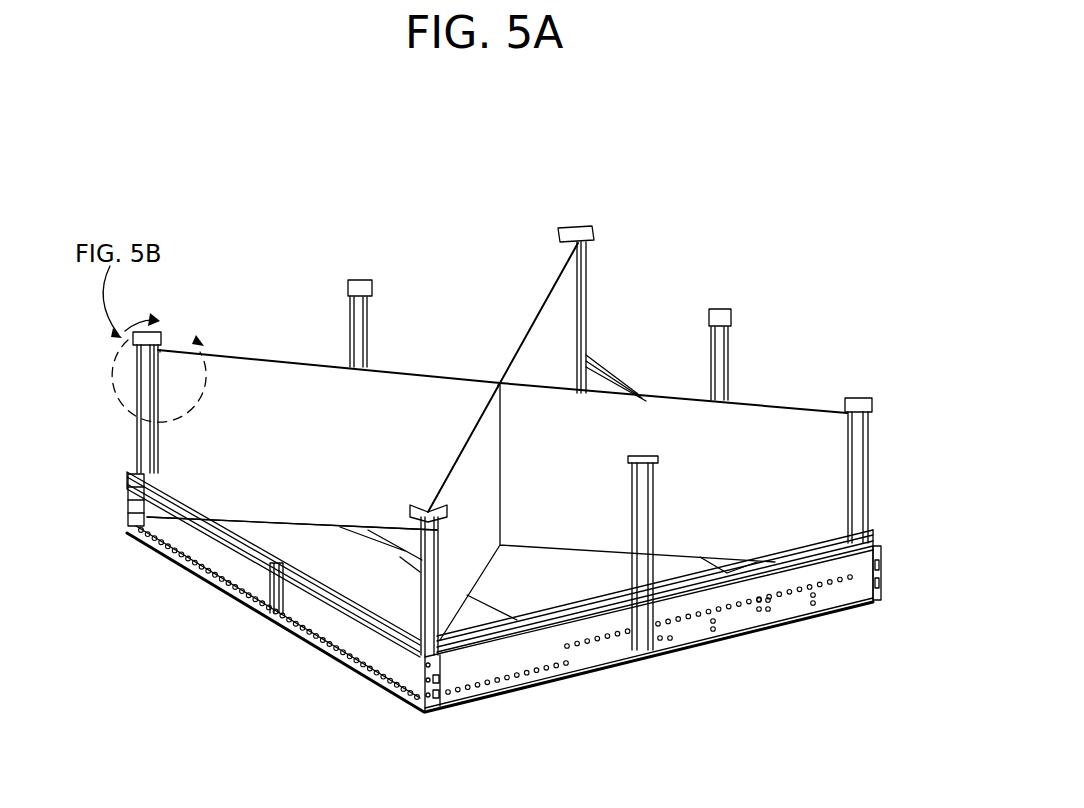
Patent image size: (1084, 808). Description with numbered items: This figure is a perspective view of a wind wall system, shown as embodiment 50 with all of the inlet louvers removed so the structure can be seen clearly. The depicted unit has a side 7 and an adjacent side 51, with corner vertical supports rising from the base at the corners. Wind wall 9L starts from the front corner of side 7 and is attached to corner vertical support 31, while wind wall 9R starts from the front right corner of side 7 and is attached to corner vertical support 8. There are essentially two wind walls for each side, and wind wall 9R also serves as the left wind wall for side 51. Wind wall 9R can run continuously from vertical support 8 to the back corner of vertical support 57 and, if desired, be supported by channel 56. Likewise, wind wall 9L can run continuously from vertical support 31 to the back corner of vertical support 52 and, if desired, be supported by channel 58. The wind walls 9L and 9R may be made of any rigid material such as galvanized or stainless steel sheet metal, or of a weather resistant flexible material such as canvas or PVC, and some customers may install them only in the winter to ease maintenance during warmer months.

The embodiment 50 is at (395, 210).
The side 51 is at (535, 687).
The side 7 is at (177, 530).
The channel 58 is at (247, 355).
The wind wall 9L is at (247, 460).
The wind wall 9R is at (457, 468).
The channel 56 is at (535, 325).
The vertical support 57 is at (577, 228).
The vertical support 52 is at (853, 403).
The corner vertical support 31 is at (135, 397).
The corner vertical support 8 is at (433, 605).